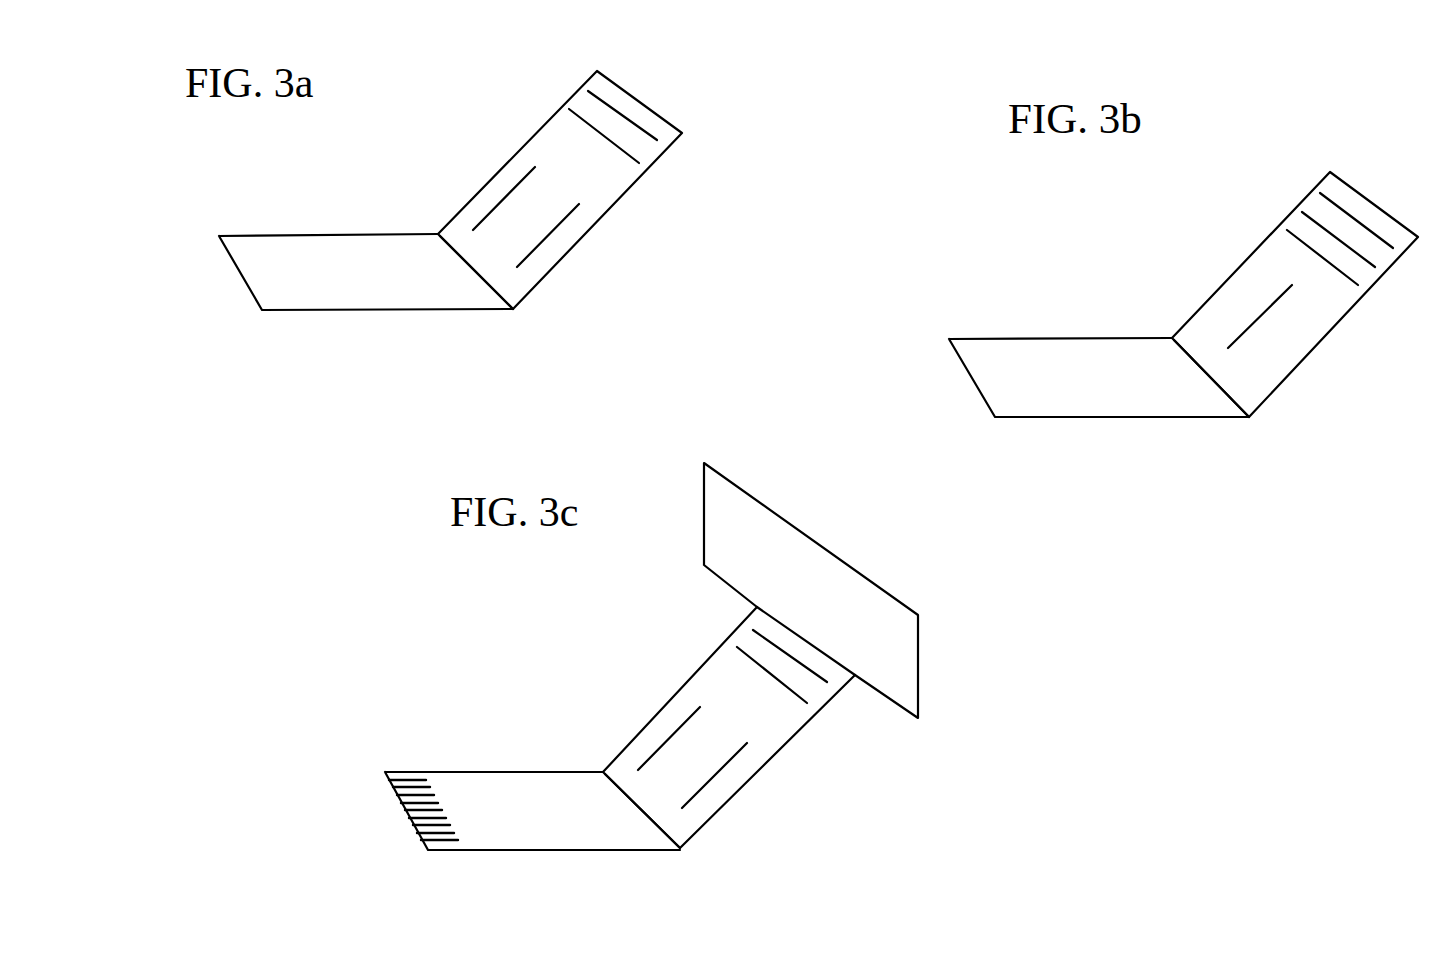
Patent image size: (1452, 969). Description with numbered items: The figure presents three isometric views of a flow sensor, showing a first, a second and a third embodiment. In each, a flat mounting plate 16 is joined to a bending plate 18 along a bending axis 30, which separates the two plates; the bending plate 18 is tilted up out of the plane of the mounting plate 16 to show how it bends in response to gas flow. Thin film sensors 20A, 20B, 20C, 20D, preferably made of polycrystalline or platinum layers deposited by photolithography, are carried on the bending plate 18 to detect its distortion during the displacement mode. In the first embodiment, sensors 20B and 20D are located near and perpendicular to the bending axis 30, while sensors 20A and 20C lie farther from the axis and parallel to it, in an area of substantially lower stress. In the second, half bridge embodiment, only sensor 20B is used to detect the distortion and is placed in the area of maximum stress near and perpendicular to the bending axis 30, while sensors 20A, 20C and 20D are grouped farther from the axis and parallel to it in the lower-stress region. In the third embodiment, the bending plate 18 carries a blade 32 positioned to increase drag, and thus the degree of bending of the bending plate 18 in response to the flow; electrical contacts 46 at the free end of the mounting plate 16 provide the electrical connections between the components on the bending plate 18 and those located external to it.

In FIG. 3a, the mounting plate 16 is at (425, 293).
In FIG. 3b, the mounting plate 16 is at (1146, 401).
In FIG. 3c, the mounting plate 16 is at (547, 788).
In FIG. 3a, the bending plate 18 is at (607, 183).
In FIG. 3b, the bending plate 18 is at (1393, 220).
In FIG. 3c, the bending plate 18 is at (800, 725).
In FIG. 3a, the sensor 20A is at (593, 128).
In FIG. 3b, the sensor 20A is at (1320, 217).
In FIG. 3a, the sensor 20B is at (545, 243).
In FIG. 3b, the sensor 20B is at (1260, 325).
In FIG. 3a, the sensor 20C is at (643, 130).
In FIG. 3b, the sensor 20C is at (1347, 210).
In FIG. 3a, the sensor 20D is at (495, 205).
In FIG. 3b, the sensor 20D is at (1328, 262).
In FIG. 3a, the bending axis 30 is at (447, 254).
In FIG. 3b, the bending axis 30 is at (1205, 375).
In FIG. 3c, the bending axis 30 is at (645, 817).
In FIG. 3c, the blade 32 is at (920, 648).
In FIG. 3c, the electrical contacts 46 is at (455, 838).